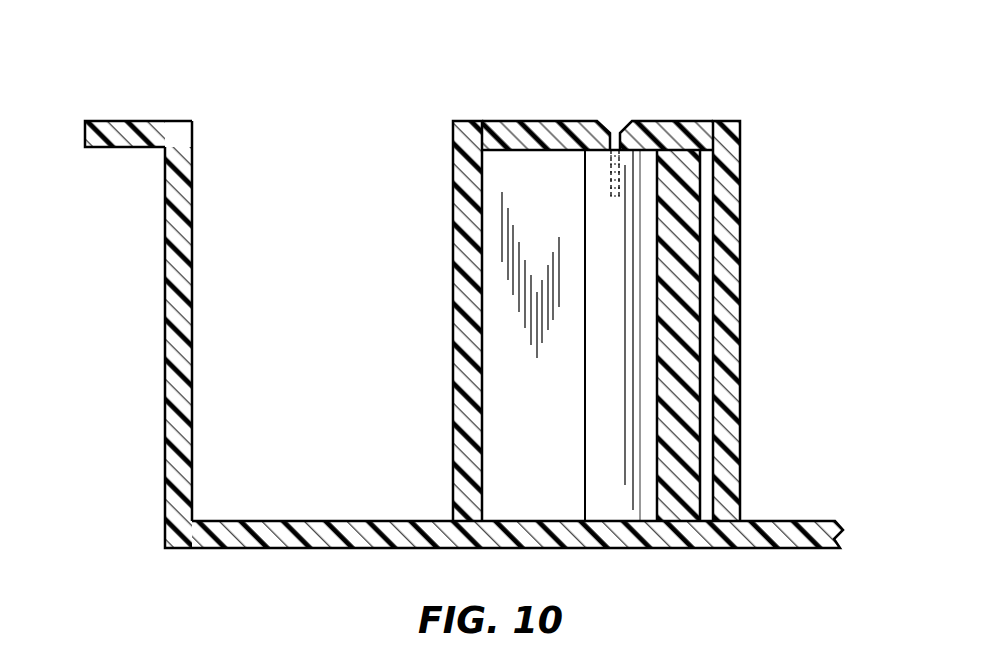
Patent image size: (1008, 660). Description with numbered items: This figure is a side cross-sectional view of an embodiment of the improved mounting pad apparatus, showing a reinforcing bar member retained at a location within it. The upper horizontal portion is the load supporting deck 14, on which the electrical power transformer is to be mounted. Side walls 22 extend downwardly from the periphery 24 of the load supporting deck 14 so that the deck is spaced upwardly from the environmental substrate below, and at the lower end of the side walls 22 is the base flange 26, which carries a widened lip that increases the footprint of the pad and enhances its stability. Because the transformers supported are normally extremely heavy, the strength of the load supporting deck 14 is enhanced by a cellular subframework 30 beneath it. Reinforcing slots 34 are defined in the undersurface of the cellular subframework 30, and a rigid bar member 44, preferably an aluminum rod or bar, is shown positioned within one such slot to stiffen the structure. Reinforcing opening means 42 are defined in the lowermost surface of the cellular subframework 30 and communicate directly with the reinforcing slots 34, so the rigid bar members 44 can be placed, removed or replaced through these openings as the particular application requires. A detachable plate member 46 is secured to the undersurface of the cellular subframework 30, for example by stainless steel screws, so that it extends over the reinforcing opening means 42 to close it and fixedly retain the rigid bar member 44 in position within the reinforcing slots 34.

The load supporting deck 14 is at (310, 548).
The side walls 22 is at (172, 262).
The periphery 24 is at (165, 548).
The base flange 26 is at (107, 127).
The cellular subframework 30 is at (462, 175).
The reinforcing slots 34 is at (648, 317).
The reinforcing opening means 42 is at (652, 150).
The rigid bar members 44 is at (688, 209).
The detachable plate members 46 is at (567, 132).